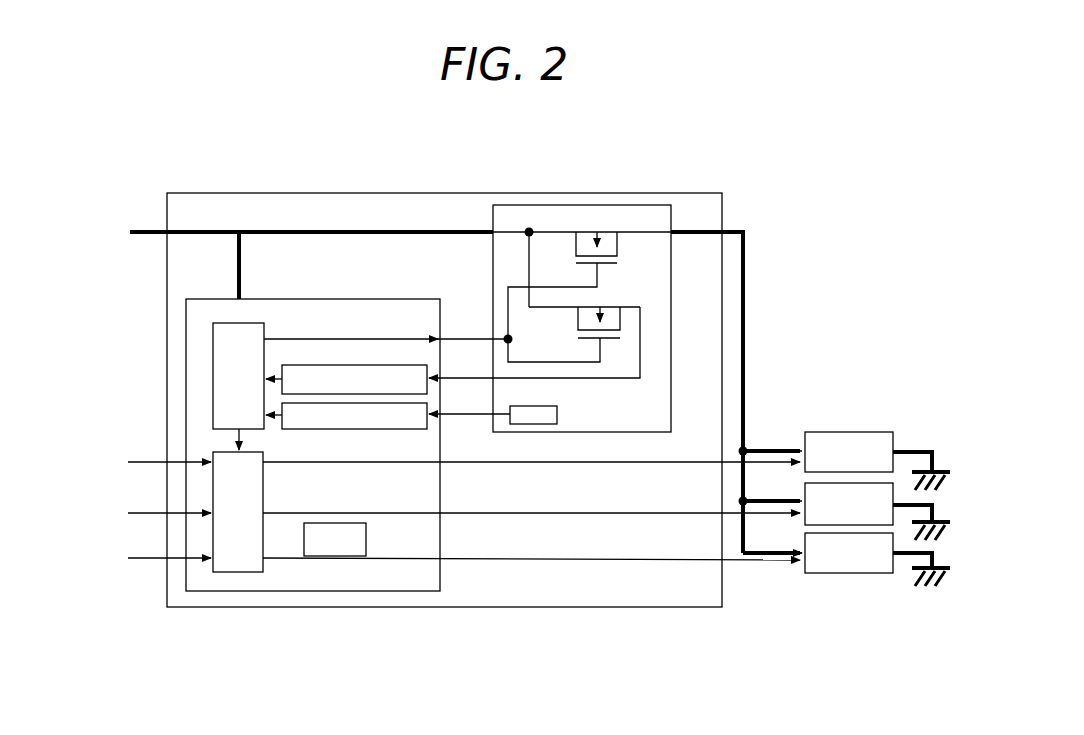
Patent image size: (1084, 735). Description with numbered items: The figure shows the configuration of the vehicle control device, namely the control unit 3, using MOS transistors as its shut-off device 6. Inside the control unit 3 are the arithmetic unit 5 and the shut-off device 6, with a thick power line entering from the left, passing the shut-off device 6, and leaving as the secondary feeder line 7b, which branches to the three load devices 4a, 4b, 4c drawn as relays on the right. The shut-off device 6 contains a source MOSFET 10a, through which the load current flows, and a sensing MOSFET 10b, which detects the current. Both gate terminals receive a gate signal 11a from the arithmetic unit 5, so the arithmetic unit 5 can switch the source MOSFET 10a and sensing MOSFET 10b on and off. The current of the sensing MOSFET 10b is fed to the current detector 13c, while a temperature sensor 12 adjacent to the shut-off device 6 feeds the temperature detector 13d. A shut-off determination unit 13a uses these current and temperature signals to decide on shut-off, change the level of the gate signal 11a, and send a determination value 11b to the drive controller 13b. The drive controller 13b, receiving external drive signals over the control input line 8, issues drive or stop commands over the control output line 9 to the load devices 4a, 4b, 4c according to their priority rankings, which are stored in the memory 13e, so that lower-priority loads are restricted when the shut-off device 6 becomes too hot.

The control unit 3 is at (346, 193).
The arithmetic unit 5 is at (184, 318).
The shut-off device 6 is at (629, 205).
The secondary feeder line 7b is at (738, 231).
The control input line 8 is at (138, 466).
The control output line 9 is at (673, 462).
The source MOSFET 10a is at (585, 230).
The sensing MOSFET 10b is at (620, 318).
The gate signal 11a is at (473, 336).
The determination value 11b is at (212, 447).
The temperature sensor 12 is at (526, 424).
The shut-off determination unit 13a is at (213, 390).
The drive controller 13b is at (244, 572).
The current detector 13c is at (427, 372).
The temperature detector 13d is at (427, 425).
The memory 13e is at (366, 539).
The load device 4a is at (822, 430).
The load device 4b is at (876, 490).
The load device 4c is at (852, 575).